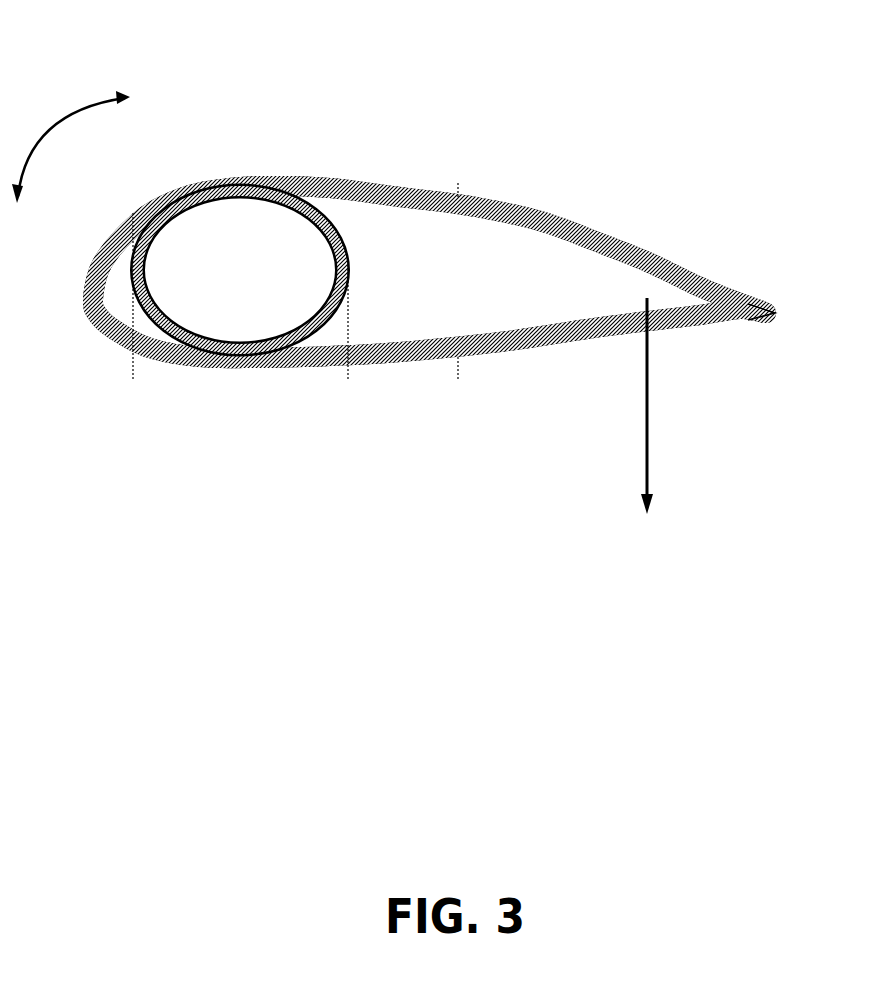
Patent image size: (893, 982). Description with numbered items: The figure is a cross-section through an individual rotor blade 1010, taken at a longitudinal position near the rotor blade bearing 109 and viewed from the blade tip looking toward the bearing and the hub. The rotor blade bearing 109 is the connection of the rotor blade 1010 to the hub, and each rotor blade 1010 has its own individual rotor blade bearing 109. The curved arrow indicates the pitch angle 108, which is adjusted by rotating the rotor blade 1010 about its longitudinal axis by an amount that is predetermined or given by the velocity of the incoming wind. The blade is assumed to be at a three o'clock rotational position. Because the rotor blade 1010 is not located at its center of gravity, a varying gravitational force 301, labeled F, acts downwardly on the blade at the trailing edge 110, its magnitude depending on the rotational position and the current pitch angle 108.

The pitch angle 108 is at (57, 120).
The individual rotor blade 1010 is at (399, 195).
The trailing edge 110 is at (748, 297).
The rotor blade bearing 109 is at (228, 310).
The gravitational force 301 is at (645, 453).